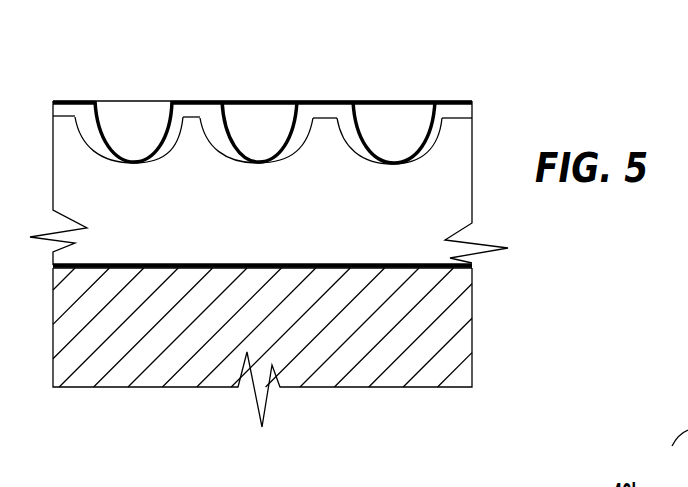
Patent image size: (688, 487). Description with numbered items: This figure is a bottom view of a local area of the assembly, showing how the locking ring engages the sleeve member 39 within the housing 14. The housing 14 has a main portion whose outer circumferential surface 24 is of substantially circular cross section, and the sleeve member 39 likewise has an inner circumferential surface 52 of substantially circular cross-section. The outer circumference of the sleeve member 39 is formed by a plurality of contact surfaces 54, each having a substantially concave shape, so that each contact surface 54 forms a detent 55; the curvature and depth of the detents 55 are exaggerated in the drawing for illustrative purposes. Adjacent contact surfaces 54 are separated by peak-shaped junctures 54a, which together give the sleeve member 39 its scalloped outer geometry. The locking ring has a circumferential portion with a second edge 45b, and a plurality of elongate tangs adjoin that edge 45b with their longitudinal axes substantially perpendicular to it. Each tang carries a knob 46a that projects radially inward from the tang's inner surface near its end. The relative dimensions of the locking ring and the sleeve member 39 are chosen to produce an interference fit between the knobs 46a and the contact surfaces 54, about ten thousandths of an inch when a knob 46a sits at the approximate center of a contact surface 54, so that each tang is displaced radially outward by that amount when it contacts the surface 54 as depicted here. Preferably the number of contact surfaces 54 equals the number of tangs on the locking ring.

The housing 14 is at (350, 350).
The outer circumferential surface 24 is at (430, 268).
The sleeve member 39 is at (285, 217).
The second edge 45b is at (193, 100).
The knob 46a is at (153, 133).
The inner circumferential surface 52 is at (152, 268).
The contact surface 54 is at (442, 112).
The peak-shaped juncture 54a is at (200, 122).
The detent 55 is at (347, 115).